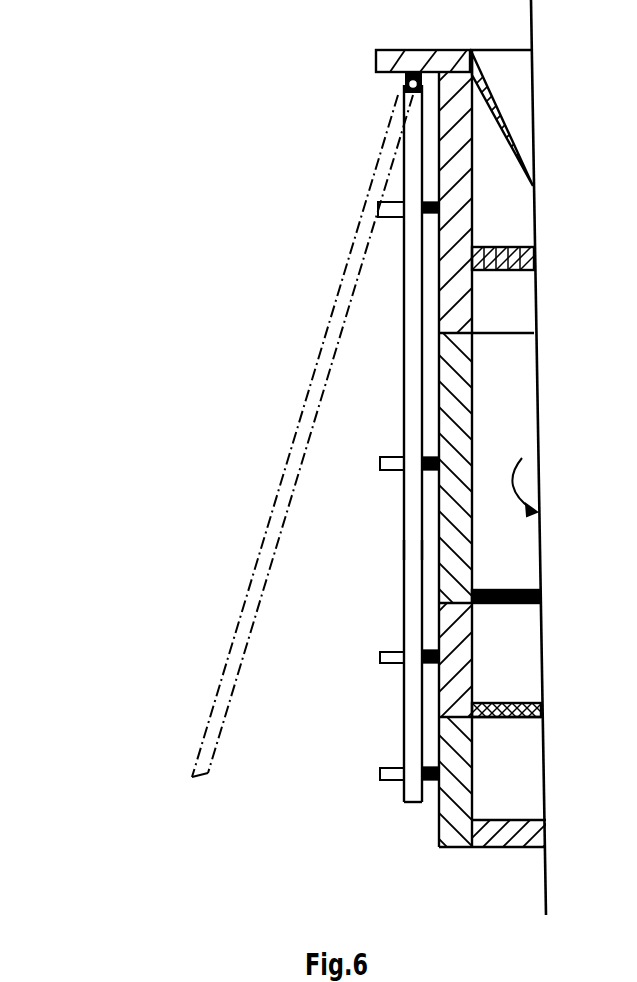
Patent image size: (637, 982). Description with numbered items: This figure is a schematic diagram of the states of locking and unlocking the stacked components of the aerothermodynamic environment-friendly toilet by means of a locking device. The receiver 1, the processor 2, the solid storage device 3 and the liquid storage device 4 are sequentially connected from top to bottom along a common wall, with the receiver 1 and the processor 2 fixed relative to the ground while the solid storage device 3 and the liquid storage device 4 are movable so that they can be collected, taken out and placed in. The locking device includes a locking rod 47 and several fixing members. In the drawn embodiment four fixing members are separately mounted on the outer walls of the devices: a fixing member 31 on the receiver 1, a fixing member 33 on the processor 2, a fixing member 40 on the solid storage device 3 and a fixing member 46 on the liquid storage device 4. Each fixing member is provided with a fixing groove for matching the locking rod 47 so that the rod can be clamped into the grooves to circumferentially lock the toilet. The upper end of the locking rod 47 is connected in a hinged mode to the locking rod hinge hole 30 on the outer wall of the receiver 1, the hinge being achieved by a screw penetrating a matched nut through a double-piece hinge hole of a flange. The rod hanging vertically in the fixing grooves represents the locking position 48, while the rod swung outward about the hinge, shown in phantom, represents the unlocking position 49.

The receiver 1 is at (463, 151).
The processor 2 is at (463, 437).
The solid storage device 3 is at (458, 660).
The liquid storage device 4 is at (473, 783).
The locking rod hinge hole 30 is at (405, 90).
The fixing member 31 is at (388, 213).
The fixing member 33 is at (392, 465).
The fixing member 40 is at (380, 662).
The fixing member 46 is at (380, 778).
The locking rod 47 is at (415, 305).
The locking position 48 is at (415, 547).
The unlocking position 49 is at (218, 700).